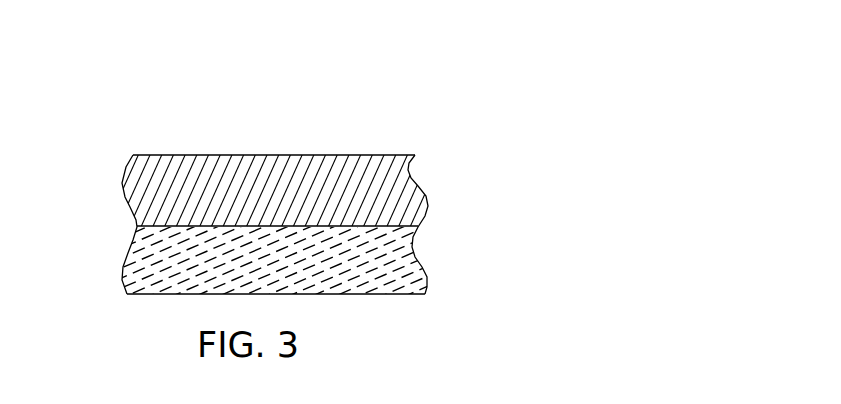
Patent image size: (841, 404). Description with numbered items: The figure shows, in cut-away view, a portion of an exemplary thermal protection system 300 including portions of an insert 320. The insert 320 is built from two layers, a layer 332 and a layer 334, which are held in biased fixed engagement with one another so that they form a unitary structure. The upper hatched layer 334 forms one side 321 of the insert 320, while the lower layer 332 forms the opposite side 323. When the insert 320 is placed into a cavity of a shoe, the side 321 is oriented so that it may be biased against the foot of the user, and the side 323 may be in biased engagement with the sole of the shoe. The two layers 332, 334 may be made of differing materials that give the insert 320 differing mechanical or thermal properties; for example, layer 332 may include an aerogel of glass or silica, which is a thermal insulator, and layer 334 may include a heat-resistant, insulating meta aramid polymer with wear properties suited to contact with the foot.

The thermal protection system 300 is at (445, 83).
The insert 320 is at (127, 294).
The side 321 is at (263, 155).
The side 323 is at (372, 294).
The layer 334 is at (407, 198).
The layer 332 is at (407, 261).